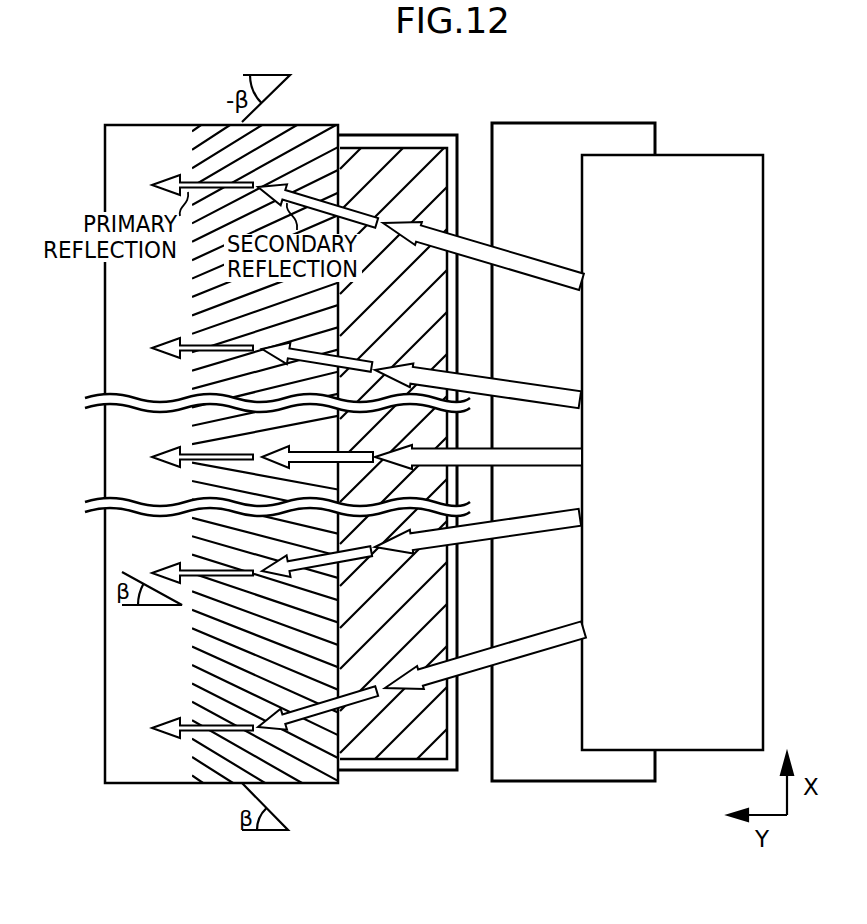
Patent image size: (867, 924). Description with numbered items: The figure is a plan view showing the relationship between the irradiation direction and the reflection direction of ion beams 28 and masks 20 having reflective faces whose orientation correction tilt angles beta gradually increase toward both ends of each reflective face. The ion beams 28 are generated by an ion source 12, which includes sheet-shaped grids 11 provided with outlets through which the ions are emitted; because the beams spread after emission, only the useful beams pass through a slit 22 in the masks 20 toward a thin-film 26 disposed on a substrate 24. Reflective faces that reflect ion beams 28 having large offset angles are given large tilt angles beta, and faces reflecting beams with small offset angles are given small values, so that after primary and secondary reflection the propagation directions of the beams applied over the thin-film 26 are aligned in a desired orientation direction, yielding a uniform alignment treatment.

The grid 11 is at (595, 776).
The ion source 12 is at (725, 743).
The mask 20 is at (192, 776).
The slit 22 is at (473, 738).
The substrate 24 is at (395, 771).
The thin-film 26 is at (366, 165).
The ion beams 28 is at (470, 243).